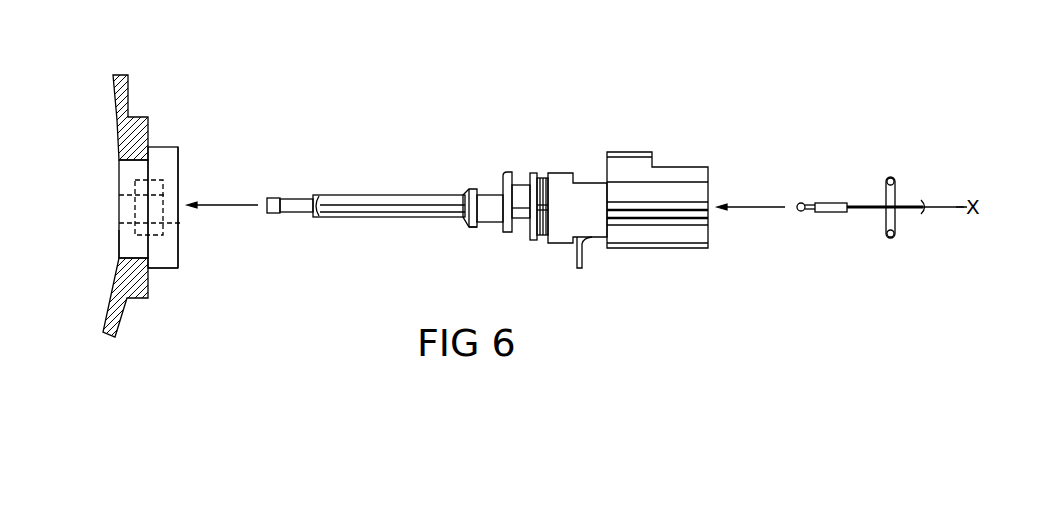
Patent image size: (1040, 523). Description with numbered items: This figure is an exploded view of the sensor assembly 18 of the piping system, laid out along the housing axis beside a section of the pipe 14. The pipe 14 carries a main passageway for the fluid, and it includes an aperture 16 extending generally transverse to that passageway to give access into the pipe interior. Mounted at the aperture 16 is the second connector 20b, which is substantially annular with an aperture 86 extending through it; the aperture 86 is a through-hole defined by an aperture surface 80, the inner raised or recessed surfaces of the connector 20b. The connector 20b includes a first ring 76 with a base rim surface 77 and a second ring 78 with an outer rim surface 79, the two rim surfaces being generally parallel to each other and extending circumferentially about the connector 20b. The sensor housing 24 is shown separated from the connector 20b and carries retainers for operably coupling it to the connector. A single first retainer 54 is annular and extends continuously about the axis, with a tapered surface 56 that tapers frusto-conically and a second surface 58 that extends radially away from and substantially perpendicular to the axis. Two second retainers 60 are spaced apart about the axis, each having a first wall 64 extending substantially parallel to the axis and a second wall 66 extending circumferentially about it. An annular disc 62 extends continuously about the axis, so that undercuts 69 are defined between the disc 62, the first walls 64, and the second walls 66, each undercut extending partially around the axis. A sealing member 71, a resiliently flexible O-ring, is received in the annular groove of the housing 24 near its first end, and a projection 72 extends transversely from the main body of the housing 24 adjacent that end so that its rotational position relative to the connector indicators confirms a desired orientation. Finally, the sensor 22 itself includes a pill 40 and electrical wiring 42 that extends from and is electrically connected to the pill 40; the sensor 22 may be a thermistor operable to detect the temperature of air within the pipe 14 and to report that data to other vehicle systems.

The pipe 14 is at (128, 97).
The aperture 16 is at (121, 170).
The second connector 20b is at (186, 146).
The aperture 86 is at (162, 205).
The aperture surface 80 is at (182, 223).
The base rim surface 77 is at (121, 245).
The first ring 76 is at (117, 288).
The outer rim surface 79 is at (180, 257).
The second ring 78 is at (162, 263).
The sensor assembly 18 is at (607, 86).
The sensor housing 24 is at (629, 147).
The second retainer 60 is at (499, 168).
The first retainer 54 is at (464, 185).
The tapered surface 56 is at (471, 224).
The second surface 58 is at (480, 226).
The second wall 66 is at (503, 185).
The undercut 69 is at (520, 200).
The annular disc 62 is at (531, 172).
The first wall 64 is at (512, 212).
The projection 72 is at (582, 270).
The pill 40 is at (801, 202).
The electrical wiring 42 is at (866, 212).
The sensor 22 is at (808, 214).
The sealing member 71 is at (888, 177).